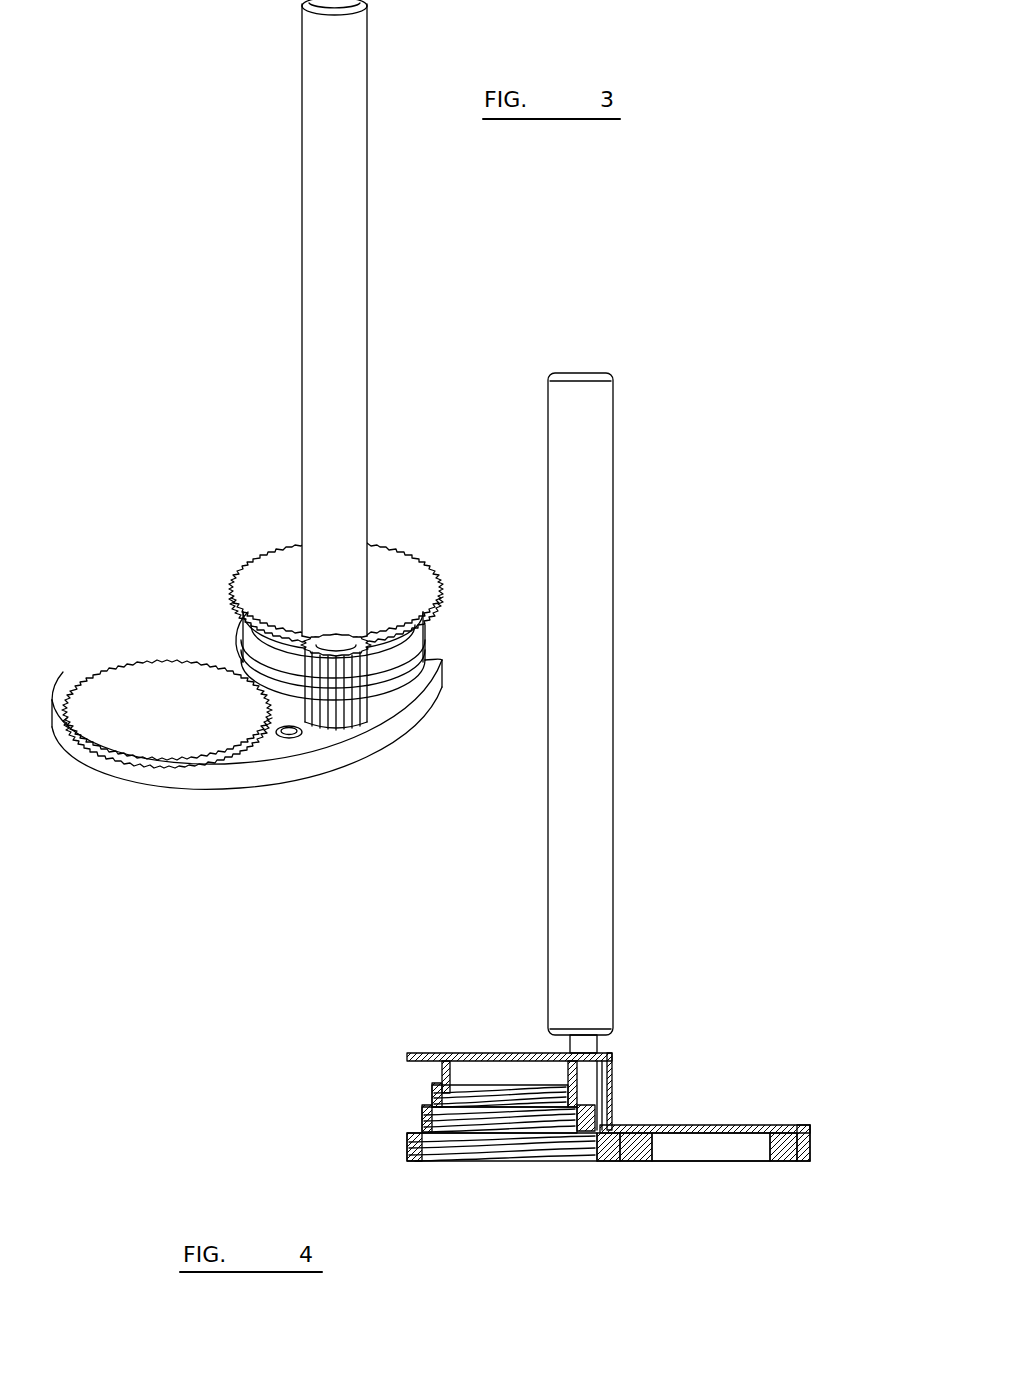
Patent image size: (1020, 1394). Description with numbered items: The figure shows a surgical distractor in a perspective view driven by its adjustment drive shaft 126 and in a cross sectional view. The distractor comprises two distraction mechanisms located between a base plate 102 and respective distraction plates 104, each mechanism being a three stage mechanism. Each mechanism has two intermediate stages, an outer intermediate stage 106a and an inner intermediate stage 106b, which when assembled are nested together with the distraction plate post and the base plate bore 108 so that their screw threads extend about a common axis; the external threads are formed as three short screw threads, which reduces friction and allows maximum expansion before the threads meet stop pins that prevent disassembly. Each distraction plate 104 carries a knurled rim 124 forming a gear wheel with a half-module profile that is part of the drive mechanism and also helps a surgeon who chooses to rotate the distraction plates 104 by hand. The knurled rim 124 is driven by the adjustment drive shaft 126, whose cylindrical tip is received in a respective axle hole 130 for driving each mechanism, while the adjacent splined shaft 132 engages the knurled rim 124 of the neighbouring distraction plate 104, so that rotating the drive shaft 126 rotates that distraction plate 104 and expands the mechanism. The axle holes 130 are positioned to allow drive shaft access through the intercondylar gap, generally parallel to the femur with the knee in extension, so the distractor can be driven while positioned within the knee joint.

In FIG. 4, the base plate 102 is at (815, 1142).
In FIG. 3, the distraction plate 104 is at (392, 580).
In FIG. 4, the distraction plate 104 is at (448, 1053).
In FIG. 3, the outer intermediate stage 106a is at (243, 658).
In FIG. 4, the outer intermediate stage 106a is at (435, 1115).
In FIG. 3, the inner intermediate stage 106b is at (262, 635).
In FIG. 4, the inner intermediate stage 106b is at (440, 1092).
In FIG. 4, the base plate bore 108 is at (470, 1163).
In FIG. 3, the knurled rim 124 is at (437, 582).
In FIG. 3, the adjustment drive shaft 126 is at (325, 115).
In FIG. 4, the adjustment drive shaft 126 is at (593, 524).
In FIG. 3, the axle hole 130 is at (291, 745).
In FIG. 3, the splined shaft 132 is at (348, 735).
In FIG. 4, the splined shaft 132 is at (607, 1085).